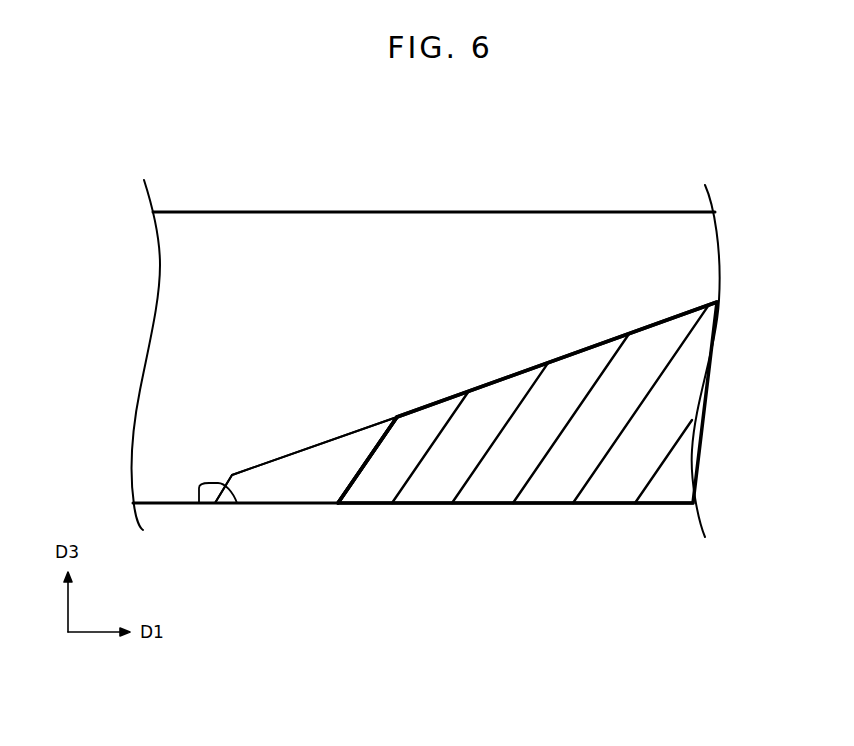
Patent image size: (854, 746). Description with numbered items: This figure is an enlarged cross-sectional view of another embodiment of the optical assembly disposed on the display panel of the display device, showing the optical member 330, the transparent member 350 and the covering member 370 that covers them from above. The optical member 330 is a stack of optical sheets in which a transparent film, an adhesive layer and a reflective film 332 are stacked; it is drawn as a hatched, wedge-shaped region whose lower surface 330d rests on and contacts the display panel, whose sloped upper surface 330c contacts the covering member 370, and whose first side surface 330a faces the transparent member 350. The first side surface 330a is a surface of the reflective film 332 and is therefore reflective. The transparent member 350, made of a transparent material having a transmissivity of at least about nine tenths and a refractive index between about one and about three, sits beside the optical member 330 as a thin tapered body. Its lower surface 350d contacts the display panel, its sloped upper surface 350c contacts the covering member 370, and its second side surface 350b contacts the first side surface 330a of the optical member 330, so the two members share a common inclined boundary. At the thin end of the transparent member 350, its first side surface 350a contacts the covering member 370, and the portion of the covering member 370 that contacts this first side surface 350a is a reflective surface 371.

The covering member 370 is at (235, 243).
The transparent member 350 is at (323, 488).
The first side surface of transparent member 350a is at (237, 503).
The second side surface of transparent member 350b is at (365, 460).
The upper surface of transparent member 350c is at (298, 447).
The lower surface of transparent member 350d is at (277, 505).
The reflective surface 371 is at (199, 503).
The optical member 330 is at (578, 380).
The first side surface of optical member 330a is at (383, 440).
The upper surface of optical member 330c is at (505, 377).
The lower surface of optical member 330d is at (557, 505).
The reflective film 332 is at (522, 487).